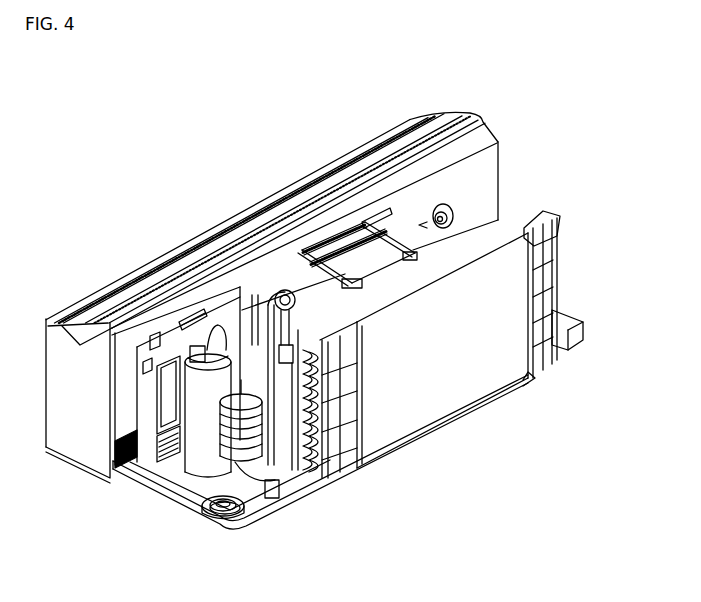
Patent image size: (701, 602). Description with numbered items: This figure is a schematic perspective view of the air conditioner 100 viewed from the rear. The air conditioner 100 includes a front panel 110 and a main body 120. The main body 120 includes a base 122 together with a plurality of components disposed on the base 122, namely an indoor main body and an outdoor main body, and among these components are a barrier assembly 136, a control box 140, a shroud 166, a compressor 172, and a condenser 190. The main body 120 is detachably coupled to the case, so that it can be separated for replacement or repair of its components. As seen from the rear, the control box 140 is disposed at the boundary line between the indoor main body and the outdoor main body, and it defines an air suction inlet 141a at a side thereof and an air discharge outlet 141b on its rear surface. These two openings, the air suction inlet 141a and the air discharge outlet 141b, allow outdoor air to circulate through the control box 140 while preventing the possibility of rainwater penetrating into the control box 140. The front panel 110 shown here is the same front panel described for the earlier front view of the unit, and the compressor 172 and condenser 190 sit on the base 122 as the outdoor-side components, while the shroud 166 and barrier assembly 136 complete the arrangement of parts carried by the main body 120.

The air conditioner 100 is at (376, 89).
The front panel 110 is at (171, 226).
The main body 120 is at (598, 221).
The base 122 is at (291, 499).
The barrier assembly 136 is at (498, 162).
The control box 140 is at (165, 458).
The air suction inlet 141a is at (110, 463).
The air discharge outlet 141b is at (165, 465).
The shroud 166 is at (532, 211).
The compressor 172 is at (213, 486).
The condenser 190 is at (430, 412).